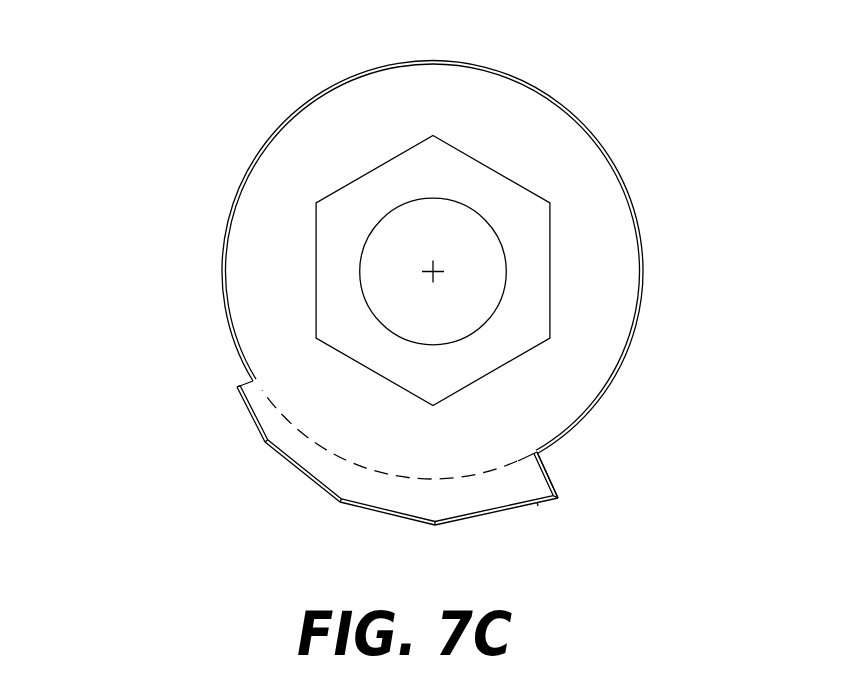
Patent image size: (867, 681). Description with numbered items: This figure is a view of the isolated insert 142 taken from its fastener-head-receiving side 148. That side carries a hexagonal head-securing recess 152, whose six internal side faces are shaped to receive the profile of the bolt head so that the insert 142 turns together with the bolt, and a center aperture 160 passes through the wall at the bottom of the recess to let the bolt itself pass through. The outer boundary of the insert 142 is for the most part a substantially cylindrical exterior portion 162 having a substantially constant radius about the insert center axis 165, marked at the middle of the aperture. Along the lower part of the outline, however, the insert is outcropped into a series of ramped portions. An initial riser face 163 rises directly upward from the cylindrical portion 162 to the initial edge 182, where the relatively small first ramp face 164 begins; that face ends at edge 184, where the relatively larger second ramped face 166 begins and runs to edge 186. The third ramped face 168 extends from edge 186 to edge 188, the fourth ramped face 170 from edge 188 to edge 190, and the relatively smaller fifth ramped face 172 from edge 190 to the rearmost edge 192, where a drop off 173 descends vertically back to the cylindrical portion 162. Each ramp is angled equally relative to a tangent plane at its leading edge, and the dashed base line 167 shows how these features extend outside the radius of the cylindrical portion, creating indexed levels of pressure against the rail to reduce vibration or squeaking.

The insert 142 is at (371, 310).
The fastener-head-receiving side 148 is at (458, 242).
The head-securing recess 152 is at (317, 256).
The center aperture 160 is at (477, 263).
The cylindrical exterior portion 162 is at (437, 61).
The initial riser face 163 is at (250, 381).
The first ramp face 164 is at (245, 412).
The insert center axis 165 is at (428, 265).
The second ramped face 166 is at (296, 469).
The base line 167 is at (540, 454).
The third ramped face 168 is at (387, 515).
The fourth ramped face 170 is at (489, 514).
The fifth ramped face 172 is at (552, 501).
The drop off 173 is at (552, 478).
The initial edge 182 is at (238, 387).
The edge 184 is at (264, 443).
The edge 186 is at (340, 503).
The edge 188 is at (435, 527).
The edge 190 is at (538, 508).
The rearmost edge 192 is at (559, 498).